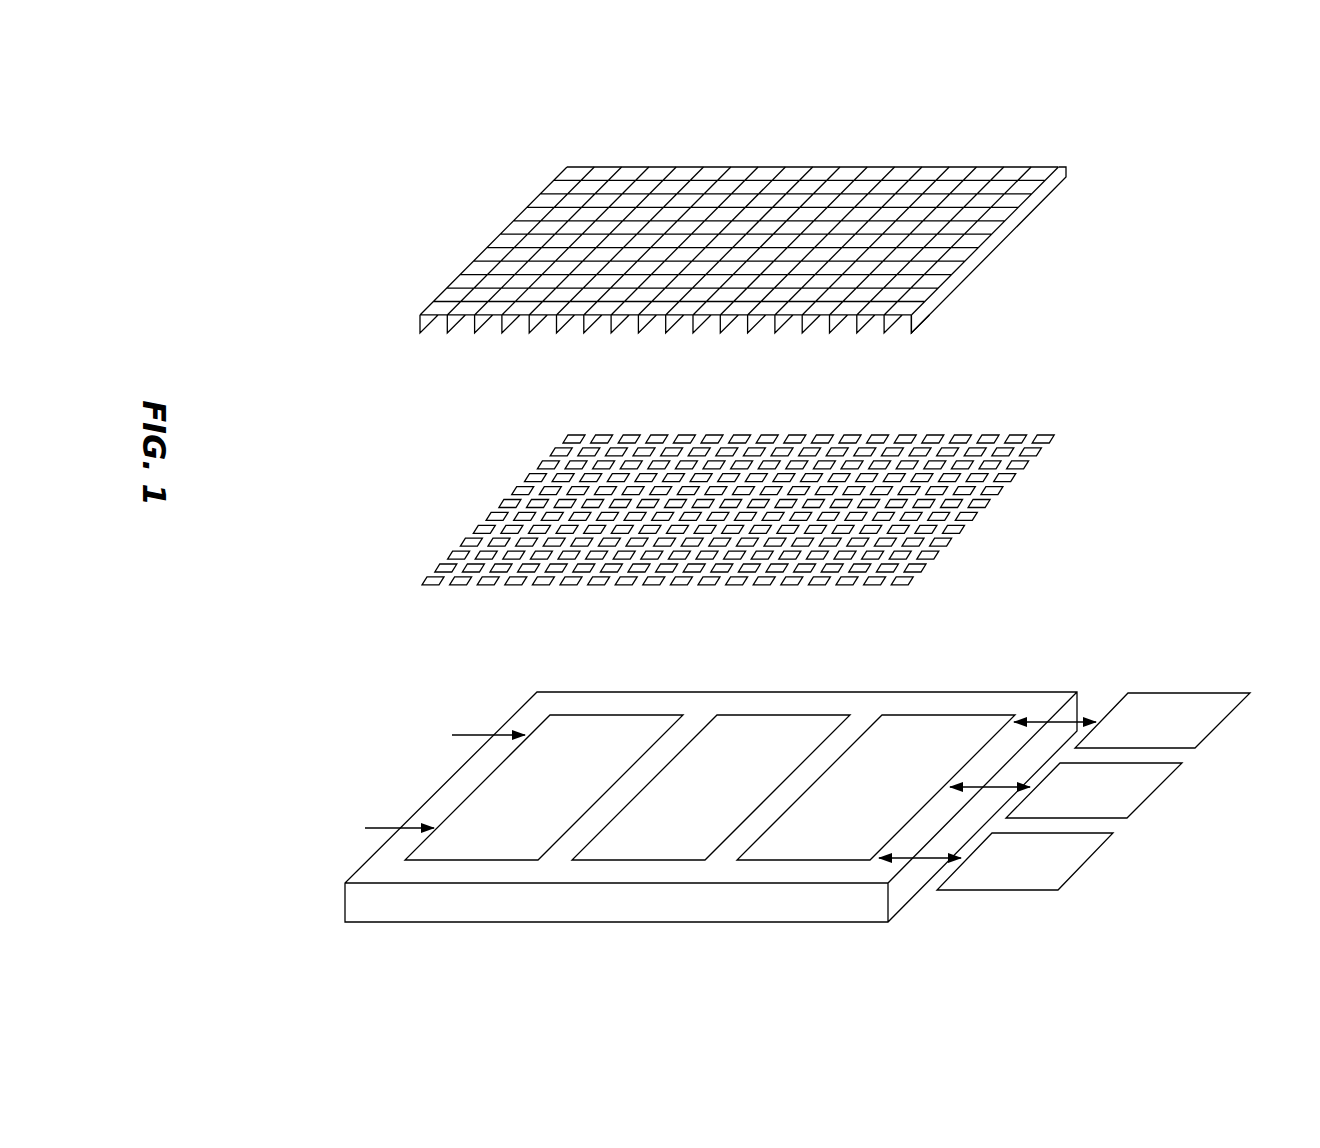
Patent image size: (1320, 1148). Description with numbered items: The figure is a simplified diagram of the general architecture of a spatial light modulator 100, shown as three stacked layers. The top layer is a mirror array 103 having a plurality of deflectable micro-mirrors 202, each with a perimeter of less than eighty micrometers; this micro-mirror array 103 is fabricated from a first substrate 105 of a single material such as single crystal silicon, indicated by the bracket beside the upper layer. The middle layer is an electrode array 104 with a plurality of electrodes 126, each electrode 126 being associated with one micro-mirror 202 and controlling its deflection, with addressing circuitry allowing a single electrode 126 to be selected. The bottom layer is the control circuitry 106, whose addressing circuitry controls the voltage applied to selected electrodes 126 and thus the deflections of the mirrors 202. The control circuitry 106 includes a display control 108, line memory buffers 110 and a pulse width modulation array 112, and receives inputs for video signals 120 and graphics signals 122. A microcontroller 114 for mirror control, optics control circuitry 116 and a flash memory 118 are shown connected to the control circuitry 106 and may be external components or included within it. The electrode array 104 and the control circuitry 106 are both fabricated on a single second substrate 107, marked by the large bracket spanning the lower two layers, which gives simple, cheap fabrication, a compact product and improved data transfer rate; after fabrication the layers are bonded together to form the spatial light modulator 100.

The spatial light modulator 100 is at (940, 92).
The mirror array 103 is at (519, 188).
The micro-mirror 202 is at (635, 167).
The first substrate 105 is at (1085, 152).
The electrode array 104 is at (484, 497).
The electrode 126 is at (658, 435).
The second substrate 107 is at (278, 433).
The control circuitry 106 is at (469, 680).
The display control 108 is at (493, 842).
The line memory buffers 110 is at (663, 842).
The pulse width modulation array 112 is at (821, 842).
The microcontroller 114 is at (1181, 693).
The optics control circuitry 116 is at (1145, 802).
The flash memory 118 is at (1080, 867).
The video signals 120 is at (323, 742).
The graphics signals 122 is at (273, 904).